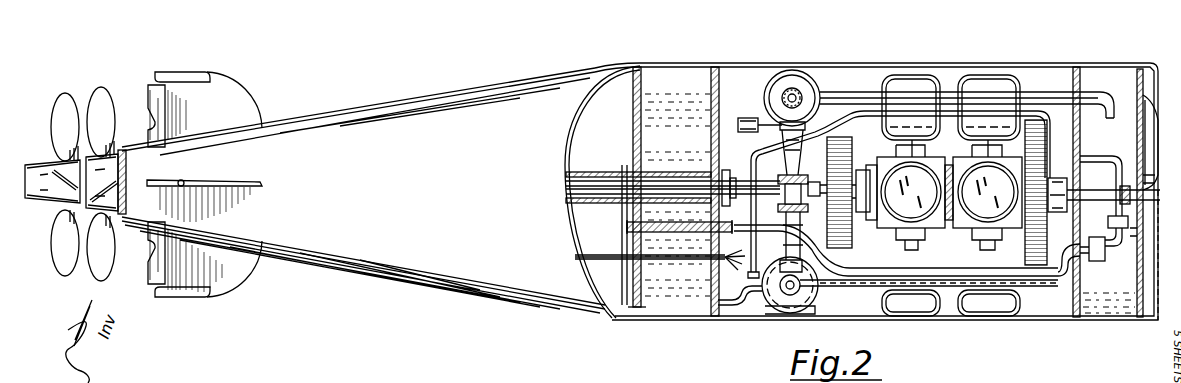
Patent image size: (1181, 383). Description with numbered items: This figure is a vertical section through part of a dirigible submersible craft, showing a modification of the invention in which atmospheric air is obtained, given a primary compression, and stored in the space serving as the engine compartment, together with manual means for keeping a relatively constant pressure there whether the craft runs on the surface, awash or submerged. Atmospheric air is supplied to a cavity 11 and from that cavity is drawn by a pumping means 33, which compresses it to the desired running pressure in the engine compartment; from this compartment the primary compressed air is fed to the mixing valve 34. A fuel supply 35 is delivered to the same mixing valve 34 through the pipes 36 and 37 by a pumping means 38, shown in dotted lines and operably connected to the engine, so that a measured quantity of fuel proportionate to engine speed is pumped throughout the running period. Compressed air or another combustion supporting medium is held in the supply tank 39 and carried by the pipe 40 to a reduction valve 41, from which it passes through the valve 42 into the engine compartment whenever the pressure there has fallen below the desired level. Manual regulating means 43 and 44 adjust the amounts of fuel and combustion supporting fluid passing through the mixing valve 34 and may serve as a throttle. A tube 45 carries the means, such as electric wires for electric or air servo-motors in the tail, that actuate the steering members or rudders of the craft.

The cavity 11 is at (1115, 82).
The pumping means 33 is at (794, 82).
The mixing valve 34 is at (1050, 128).
The fuel supply 35 is at (677, 195).
The pipe 36 is at (733, 318).
The pipe 37 is at (762, 152).
The pumping means 38 is at (805, 292).
The supply tank 39 is at (615, 187).
The pipe 40 is at (861, 272).
The reduction valve 41 is at (1090, 260).
The valve 42 is at (1130, 262).
The manual regulating means 43 is at (1150, 182).
The manual regulating means 44 is at (1140, 165).
The tube 45 is at (598, 306).